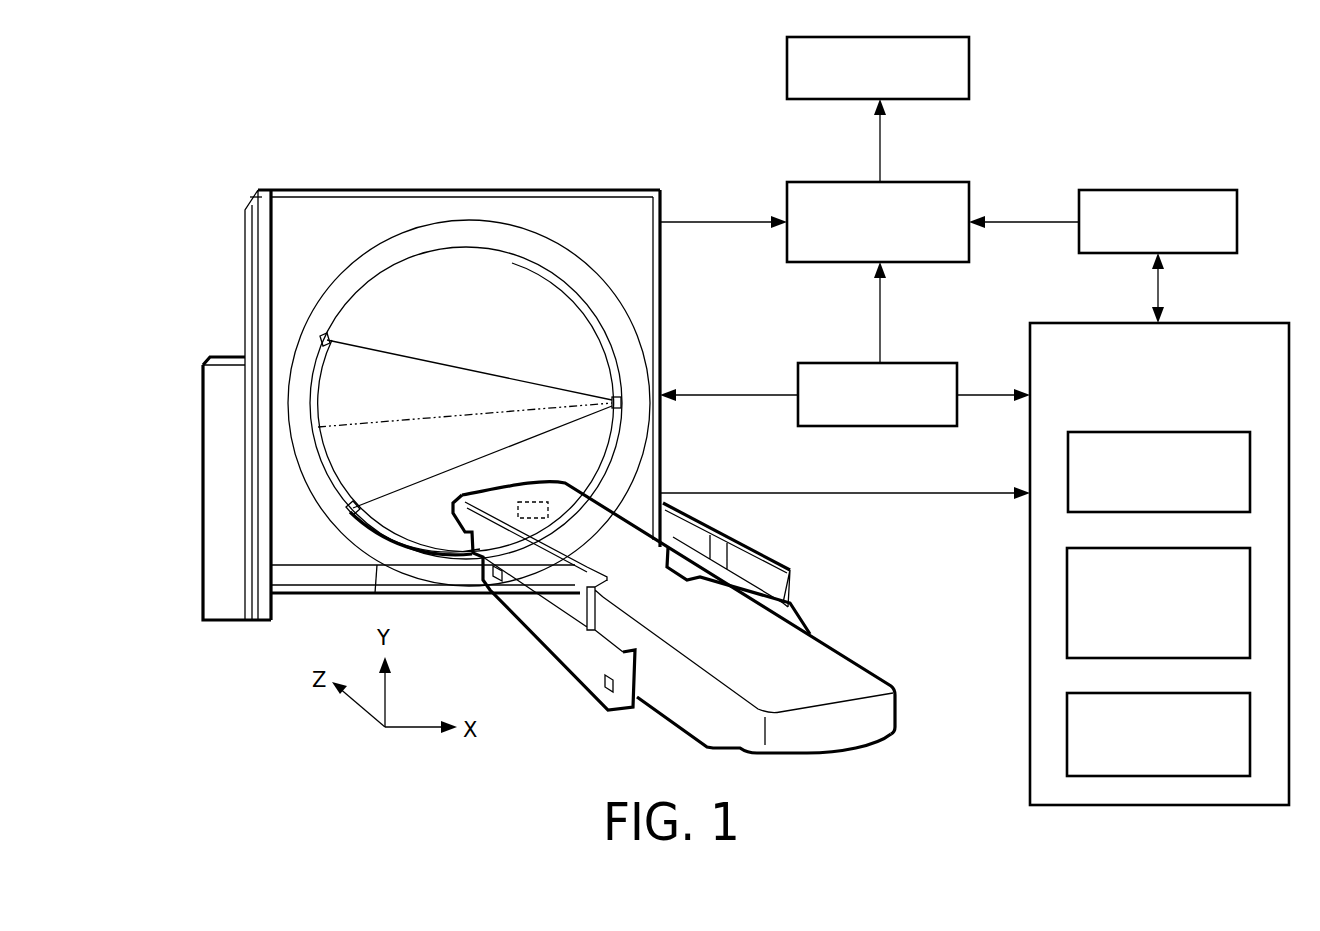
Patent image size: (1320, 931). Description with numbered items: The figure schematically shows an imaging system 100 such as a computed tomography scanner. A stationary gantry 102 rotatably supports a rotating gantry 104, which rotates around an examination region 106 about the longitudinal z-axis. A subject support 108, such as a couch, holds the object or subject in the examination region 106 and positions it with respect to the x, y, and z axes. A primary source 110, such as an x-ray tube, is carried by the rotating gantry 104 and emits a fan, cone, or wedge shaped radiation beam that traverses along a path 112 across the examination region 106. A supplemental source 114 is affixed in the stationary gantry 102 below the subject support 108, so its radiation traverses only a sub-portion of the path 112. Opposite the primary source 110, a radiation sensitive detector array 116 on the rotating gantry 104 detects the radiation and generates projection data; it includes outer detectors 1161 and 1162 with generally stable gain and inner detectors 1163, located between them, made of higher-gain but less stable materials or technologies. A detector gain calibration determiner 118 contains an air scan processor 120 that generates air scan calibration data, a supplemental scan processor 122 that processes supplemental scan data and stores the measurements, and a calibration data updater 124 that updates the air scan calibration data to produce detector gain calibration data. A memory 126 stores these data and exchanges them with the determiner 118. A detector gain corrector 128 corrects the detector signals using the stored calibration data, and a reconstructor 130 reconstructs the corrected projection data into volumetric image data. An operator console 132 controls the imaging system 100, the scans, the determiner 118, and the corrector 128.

The imaging system 100 is at (203, 135).
The stationary gantry 102 is at (245, 238).
The rotating gantry 104 is at (383, 243).
The examination region 106 is at (489, 325).
The subject support 108 is at (828, 663).
The primary source 110 is at (622, 407).
The path 112 is at (441, 414).
The supplemental source 114 is at (534, 500).
The radiation sensitive detector array 116 is at (314, 331).
The outer detector 1161 is at (326, 330).
The outer detector 1162 is at (355, 506).
The inner detectors 1163 is at (318, 399).
The detector gain calibration determiner 118 is at (1030, 540).
The air scan processor 120 is at (1068, 750).
The supplemental scan processor 122 is at (1068, 630).
The calibration data updater 124 is at (1068, 470).
The memory 126 is at (1237, 203).
The detector gain corrector 128 is at (787, 196).
The reconstructor 130 is at (787, 68).
The operator console 132 is at (798, 380).